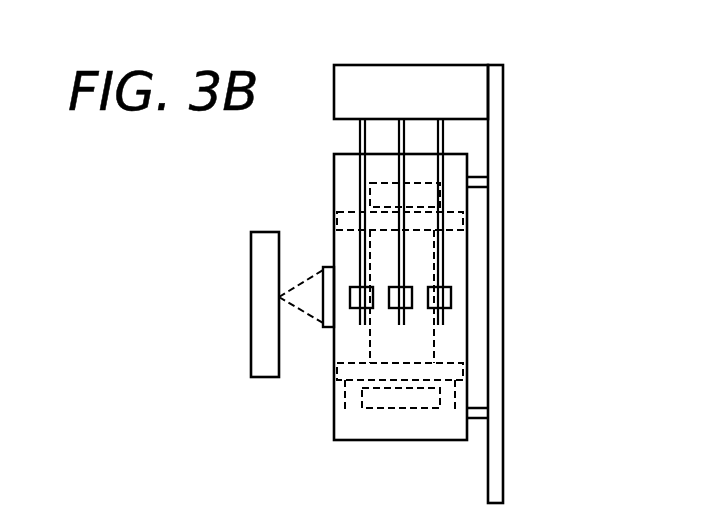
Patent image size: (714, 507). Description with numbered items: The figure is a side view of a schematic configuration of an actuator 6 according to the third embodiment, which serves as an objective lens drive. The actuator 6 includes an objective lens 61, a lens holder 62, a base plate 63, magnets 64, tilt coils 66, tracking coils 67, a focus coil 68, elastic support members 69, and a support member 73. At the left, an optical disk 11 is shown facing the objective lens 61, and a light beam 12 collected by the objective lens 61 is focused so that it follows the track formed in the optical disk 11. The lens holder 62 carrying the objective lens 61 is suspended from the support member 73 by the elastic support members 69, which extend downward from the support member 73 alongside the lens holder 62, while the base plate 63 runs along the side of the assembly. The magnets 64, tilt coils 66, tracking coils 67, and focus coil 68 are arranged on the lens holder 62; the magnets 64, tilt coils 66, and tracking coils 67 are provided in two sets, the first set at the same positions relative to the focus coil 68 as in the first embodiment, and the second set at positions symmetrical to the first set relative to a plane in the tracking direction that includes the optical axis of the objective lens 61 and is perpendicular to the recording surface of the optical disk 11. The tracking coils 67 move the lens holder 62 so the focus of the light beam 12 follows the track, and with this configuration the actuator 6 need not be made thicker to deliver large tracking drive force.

The actuator 6 is at (442, 263).
The optical disk 11 is at (262, 258).
The light beam 12 is at (308, 280).
The objective lens 61 is at (328, 328).
The lens holder 62 is at (422, 433).
The base plate 63 is at (495, 480).
The magnets 64 is at (386, 190).
The tilt coils 66 is at (465, 220).
The tracking coils 67 is at (347, 220).
The focus coil 68 is at (420, 342).
The elastic support members 69 is at (438, 138).
The support member 73 is at (357, 78).